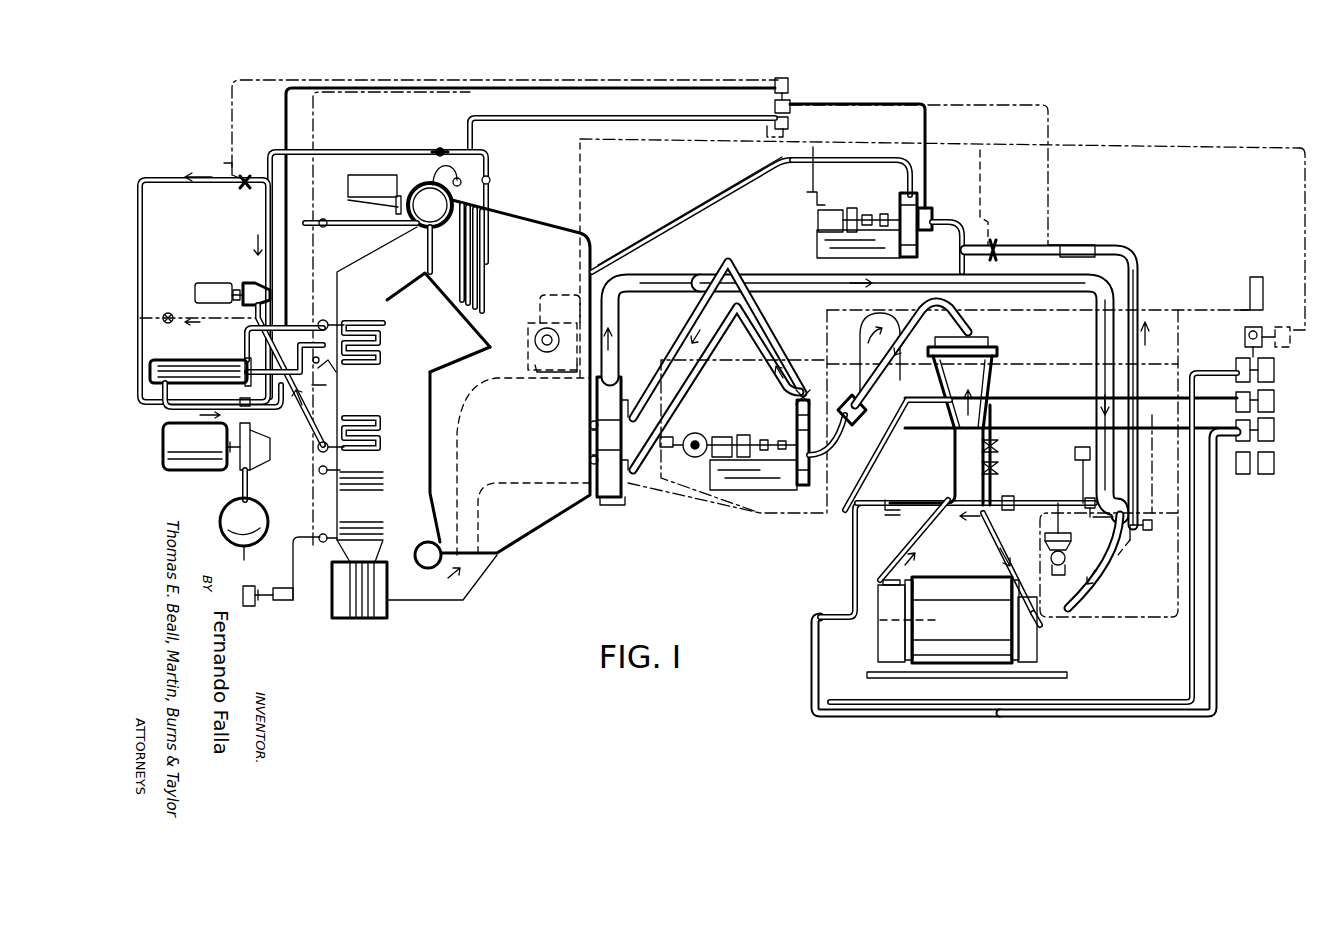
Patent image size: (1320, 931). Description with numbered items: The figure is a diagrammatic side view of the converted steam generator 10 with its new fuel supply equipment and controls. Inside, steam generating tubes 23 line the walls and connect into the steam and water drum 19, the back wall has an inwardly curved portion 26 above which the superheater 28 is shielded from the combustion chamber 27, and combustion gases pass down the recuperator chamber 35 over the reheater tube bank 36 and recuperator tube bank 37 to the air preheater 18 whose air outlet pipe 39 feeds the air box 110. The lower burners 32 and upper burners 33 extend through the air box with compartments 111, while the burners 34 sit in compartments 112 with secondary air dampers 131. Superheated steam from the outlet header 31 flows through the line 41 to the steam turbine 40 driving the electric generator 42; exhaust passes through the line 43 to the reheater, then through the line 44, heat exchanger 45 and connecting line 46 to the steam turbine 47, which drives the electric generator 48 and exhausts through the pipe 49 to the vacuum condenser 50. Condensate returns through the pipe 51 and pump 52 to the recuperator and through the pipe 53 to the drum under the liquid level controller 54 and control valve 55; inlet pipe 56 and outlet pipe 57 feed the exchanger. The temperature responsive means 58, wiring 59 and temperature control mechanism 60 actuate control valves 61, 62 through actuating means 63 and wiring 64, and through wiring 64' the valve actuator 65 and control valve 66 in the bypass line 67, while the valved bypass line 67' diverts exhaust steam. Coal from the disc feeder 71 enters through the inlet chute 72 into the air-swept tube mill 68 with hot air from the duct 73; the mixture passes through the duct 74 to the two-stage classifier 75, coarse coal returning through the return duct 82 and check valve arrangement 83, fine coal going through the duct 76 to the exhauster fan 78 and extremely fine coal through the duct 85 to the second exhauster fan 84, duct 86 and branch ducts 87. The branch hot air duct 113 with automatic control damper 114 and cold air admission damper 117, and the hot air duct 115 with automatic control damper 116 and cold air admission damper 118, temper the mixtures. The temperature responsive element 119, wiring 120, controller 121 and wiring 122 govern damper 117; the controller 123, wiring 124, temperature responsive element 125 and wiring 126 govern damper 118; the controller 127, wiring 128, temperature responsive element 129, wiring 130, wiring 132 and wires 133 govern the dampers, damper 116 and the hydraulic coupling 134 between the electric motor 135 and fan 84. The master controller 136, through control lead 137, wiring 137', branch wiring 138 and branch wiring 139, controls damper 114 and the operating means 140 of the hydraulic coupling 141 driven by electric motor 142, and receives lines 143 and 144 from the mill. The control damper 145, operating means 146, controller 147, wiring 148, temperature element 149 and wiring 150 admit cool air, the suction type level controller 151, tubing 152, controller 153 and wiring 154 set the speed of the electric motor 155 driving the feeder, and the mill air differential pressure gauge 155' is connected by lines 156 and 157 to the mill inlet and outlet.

The steam generator 10 is at (563, 541).
The air preheater 18 is at (334, 620).
The steam and water drum 19 is at (424, 184).
The steam generating tubes 23 is at (427, 250).
The inwardly curved portion 26 is at (482, 346).
The combustion chamber 27 is at (523, 466).
The superheater 28 is at (482, 258).
The outlet header 31 is at (492, 182).
The lower burners 32 is at (600, 505).
The upper burners 33 is at (609, 437).
The burner 34 is at (556, 330).
The recuperator chamber 35 is at (377, 383).
The superheated steam reheater tube bank 36 is at (385, 325).
The recuperator tube bank 37 is at (378, 490).
The air outlet pipe 39 is at (446, 600).
The steam turbine 40 is at (250, 283).
The line 41 is at (368, 152).
The electric generator 42 is at (204, 283).
The line 43 is at (240, 352).
The line 44 is at (240, 332).
The heat exchanger 45 is at (180, 360).
The connecting line 46 is at (170, 405).
The steam turbine 47 is at (262, 470).
The electric generator 48 is at (186, 472).
The pipe 49 is at (240, 496).
The vacuum condenser 50 is at (266, 512).
The pipe 51 is at (262, 608).
The pump 52 is at (290, 590).
The pipe 53 is at (332, 402).
The liquid level controller 54 is at (396, 198).
The control valve 55 is at (320, 228).
The inlet pipe 56 is at (256, 380).
The outlet pipe 57 is at (294, 362).
The temperature responsive means 58 is at (236, 395).
The wiring 59 is at (285, 130).
The temperature control mechanism 60 is at (790, 84).
The control valve 61 is at (330, 386).
The control valve 62 is at (323, 348).
The actuating means 63 is at (333, 372).
The wiring 64 is at (391, 318).
The wiring 64' is at (484, 110).
The valve actuator 65 is at (228, 165).
The control valve 66 is at (245, 188).
The superheated steam bypass line 67 is at (204, 287).
The valved bypass line 67' is at (199, 301).
The air-swept tube mill 68 is at (962, 576).
The disc feeder 71 is at (1045, 547).
The inlet chute 72 is at (1040, 630).
The duct 73 is at (678, 290).
The duct 74 is at (912, 550).
The two-stage classifier 75 is at (1000, 352).
The duct 76 is at (890, 372).
The exhauster fan 78 is at (797, 432).
The return duct 82 is at (988, 410).
The check valve arrangement 83 is at (998, 453).
The second exhauster fan 84 is at (900, 215).
The duct 85 is at (960, 215).
The duct 86 is at (866, 160).
The branch ducts 87 is at (690, 222).
The air box 110 is at (622, 378).
The compartment 111 is at (622, 506).
The compartments 112 is at (532, 318).
The branch hot air duct 113 is at (1001, 490).
The automatic control damper 114 is at (886, 500).
The hot air duct 115 is at (1140, 304).
The automatic control damper 116 is at (994, 245).
The cold air admission damper 117 is at (1085, 510).
The cold air admission damper 118 is at (1080, 245).
The temperature responsive element 119 is at (846, 400).
The wiring 120 is at (1036, 400).
The controller 121 is at (1236, 428).
The wiring 122 is at (1082, 462).
The controller 123 is at (773, 108).
The wiring 124 is at (930, 134).
The temperature responsive element 125 is at (930, 205).
The wiring 126 is at (1032, 105).
The controller 127 is at (790, 124).
The wiring 128 is at (608, 118).
The temperature responsive element 129 is at (442, 150).
The wiring 130 is at (722, 140).
The secondary air dampers 131 is at (562, 373).
The wiring 132 is at (982, 176).
The wires 133 is at (808, 195).
The hydraulic coupling 134 is at (852, 206).
The electric motor 135 is at (816, 226).
The master controller 136 is at (1245, 342).
The control lead 137 is at (1272, 239).
The wiring 137' is at (1002, 379).
The branch wiring 138 is at (806, 512).
The branch wiring 139 is at (674, 430).
The operating means 140 is at (666, 450).
The hydraulic coupling 141 is at (745, 435).
The electric motor 142 is at (722, 437).
The line 143 is at (829, 672).
The line 144 is at (1118, 620).
The control damper 145 is at (1128, 560).
The operating means 146 is at (1152, 530).
The controller 147 is at (1236, 400).
The wiring 148 is at (1153, 455).
The temperature element 149 is at (848, 596).
The wiring 150 is at (880, 458).
The suction type level controller 151 is at (926, 615).
The tubing 152 is at (812, 656).
The controller 153 is at (1258, 472).
The wiring 154 is at (1217, 482).
The electric motor 155 is at (1101, 561).
The mill air differential pressure gauge 155' is at (1238, 283).
The line 156 is at (1178, 312).
The line 157 is at (1179, 358).